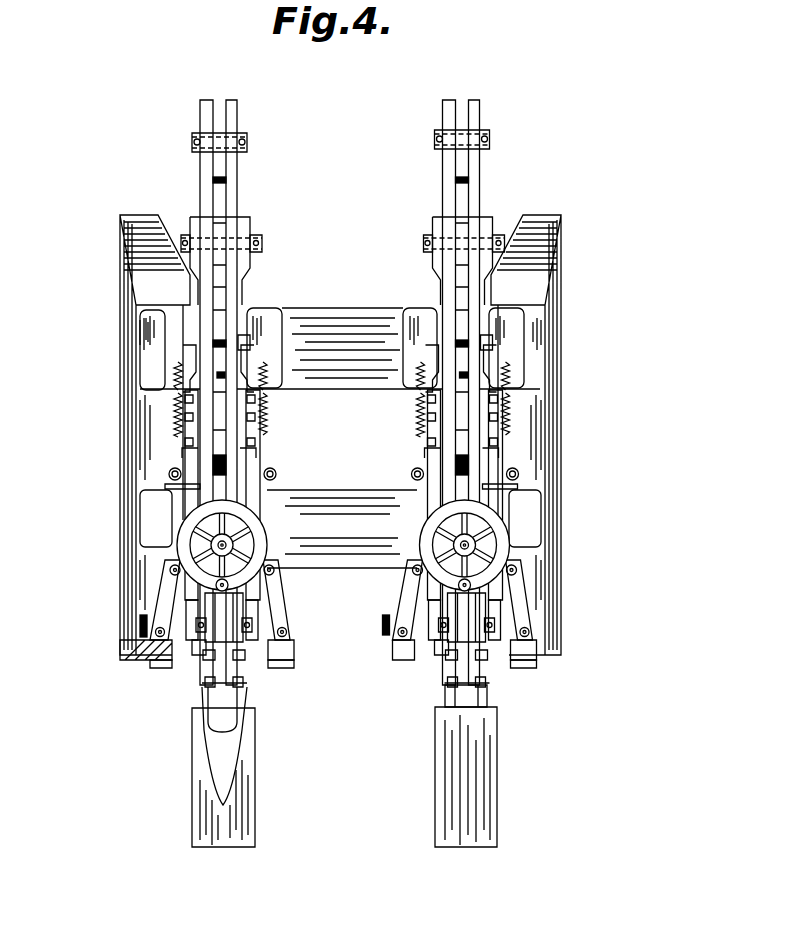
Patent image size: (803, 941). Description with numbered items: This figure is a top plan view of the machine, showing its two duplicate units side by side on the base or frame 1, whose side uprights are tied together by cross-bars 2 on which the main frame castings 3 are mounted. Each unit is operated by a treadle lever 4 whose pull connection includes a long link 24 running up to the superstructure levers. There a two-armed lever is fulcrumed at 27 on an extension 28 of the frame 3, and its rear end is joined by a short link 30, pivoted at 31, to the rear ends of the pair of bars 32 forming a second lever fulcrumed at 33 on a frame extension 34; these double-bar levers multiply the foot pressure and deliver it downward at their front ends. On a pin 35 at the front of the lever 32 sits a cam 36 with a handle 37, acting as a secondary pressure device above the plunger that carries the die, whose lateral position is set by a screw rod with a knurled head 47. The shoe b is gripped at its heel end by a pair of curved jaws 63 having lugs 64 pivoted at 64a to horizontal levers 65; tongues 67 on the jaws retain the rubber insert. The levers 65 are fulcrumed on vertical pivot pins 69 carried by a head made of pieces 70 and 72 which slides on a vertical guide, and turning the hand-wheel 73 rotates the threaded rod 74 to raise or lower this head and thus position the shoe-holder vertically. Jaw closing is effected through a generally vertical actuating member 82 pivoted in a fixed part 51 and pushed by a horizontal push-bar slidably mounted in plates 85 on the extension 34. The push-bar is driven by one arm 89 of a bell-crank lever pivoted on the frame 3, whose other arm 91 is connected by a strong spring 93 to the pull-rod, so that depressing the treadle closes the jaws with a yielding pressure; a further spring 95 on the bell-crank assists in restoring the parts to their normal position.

The base or frame 1 is at (135, 598).
The cross-bars 2 is at (348, 307).
The main frame casting 3 is at (165, 490).
The treadle lever 4 is at (196, 812).
The long link 24 is at (172, 478).
The fulcrum 27 is at (262, 240).
The frame extension 28 is at (248, 265).
The short link 30 is at (222, 119).
The pivotal connection 31 is at (192, 143).
The lever bars 32 is at (233, 190).
The fulcrum 33 is at (185, 442).
The frame extension 34 is at (256, 453).
The pin 35 is at (198, 640).
The cam 36 is at (220, 616).
The handle 37 is at (247, 682).
The knurled head 47 is at (140, 628).
The fixed part 51 is at (188, 520).
The curved jaws 63 is at (165, 658).
The lugs 64 is at (160, 640).
The pivot 64a is at (586, 638).
The horizontal levers 65 is at (160, 605).
The tongues 67 is at (172, 712).
The vertical pivot pins 69 is at (170, 572).
The head or carrier 70 is at (252, 560).
The head piece 72 is at (265, 537).
The hand-wheel 73 is at (258, 528).
The vertical rotatable rod 74 is at (455, 543).
The actuating arm or member 82 is at (250, 463).
The plates 85 is at (183, 380).
The bell-crank arm 89 is at (250, 345).
The bell-crank arm 91 is at (175, 368).
The strong spring 93 is at (185, 487).
The spring 95 is at (175, 405).
The shoe b is at (212, 728).